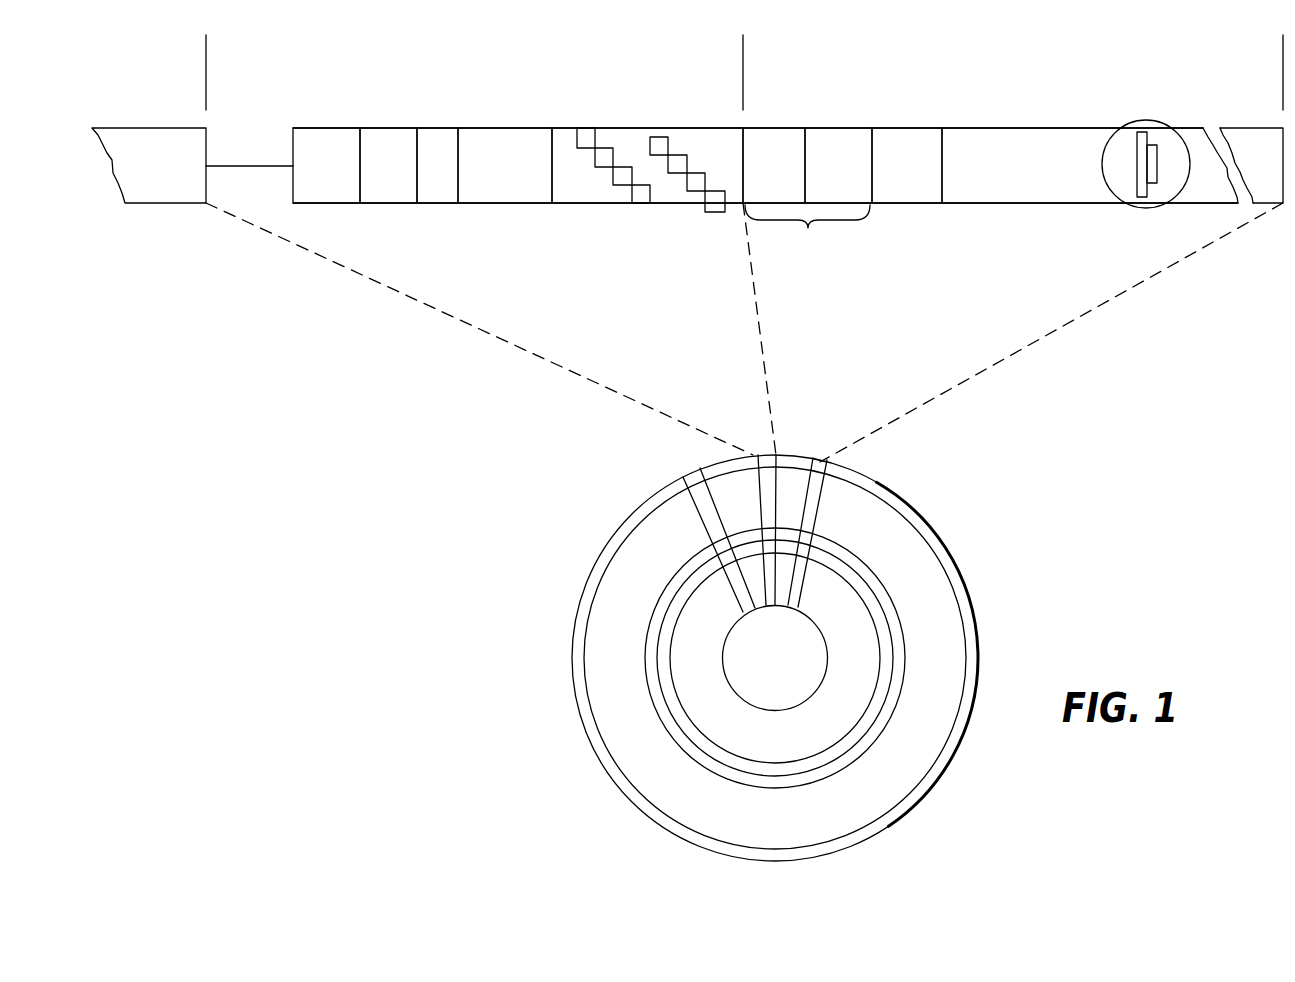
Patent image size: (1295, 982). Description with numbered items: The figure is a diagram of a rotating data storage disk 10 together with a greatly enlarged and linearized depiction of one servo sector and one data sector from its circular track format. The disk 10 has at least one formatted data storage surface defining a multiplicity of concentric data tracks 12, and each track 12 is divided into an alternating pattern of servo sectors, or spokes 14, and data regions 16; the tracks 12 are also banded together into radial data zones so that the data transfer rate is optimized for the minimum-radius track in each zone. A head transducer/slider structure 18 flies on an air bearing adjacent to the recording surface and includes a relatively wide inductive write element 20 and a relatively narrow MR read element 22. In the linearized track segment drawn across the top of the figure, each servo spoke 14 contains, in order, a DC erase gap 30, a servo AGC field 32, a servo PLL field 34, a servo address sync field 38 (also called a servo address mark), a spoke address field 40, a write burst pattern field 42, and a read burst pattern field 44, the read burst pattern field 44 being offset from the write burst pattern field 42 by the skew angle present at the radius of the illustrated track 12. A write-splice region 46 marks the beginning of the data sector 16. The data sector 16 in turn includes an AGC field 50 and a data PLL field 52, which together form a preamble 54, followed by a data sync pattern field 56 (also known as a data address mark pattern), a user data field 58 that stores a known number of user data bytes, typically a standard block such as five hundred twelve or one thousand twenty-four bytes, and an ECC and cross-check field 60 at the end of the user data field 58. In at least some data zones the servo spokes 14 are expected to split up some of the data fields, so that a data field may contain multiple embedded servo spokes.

The data storage disk 10 is at (977, 628).
The data track 12 is at (169, 233).
The servo spoke 14 is at (218, 72).
The data sector 16 is at (755, 72).
The head transducer/slider structure 18 is at (1148, 122).
The inductive write element 20 is at (1136, 186).
The MR read element 22 is at (1158, 180).
The DC erase gap 30 is at (242, 163).
The servo AGC field 32 is at (316, 203).
The servo PLL field 34 is at (380, 203).
The servo address sync field 38 is at (433, 203).
The spoke address field 40 is at (500, 203).
The write burst pattern field 42 is at (580, 128).
The read burst pattern field 44 is at (680, 136).
The write-splice region 46 is at (741, 150).
The AGC field 50 is at (776, 128).
The data PLL field 52 is at (843, 128).
The preamble 54 is at (886, 235).
The data sync pattern field 56 is at (906, 128).
The user data field 58 is at (1011, 128).
The ECC field 60 is at (1273, 128).